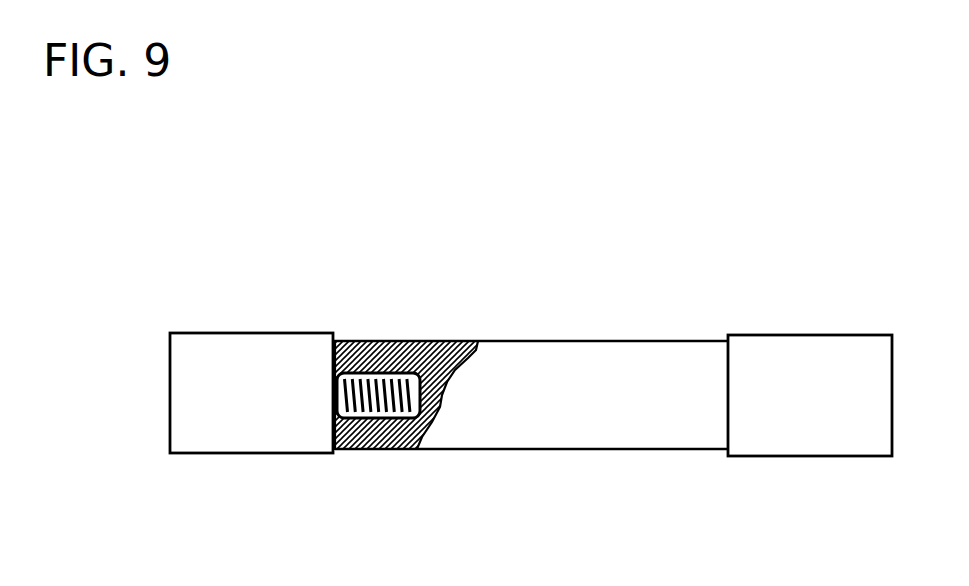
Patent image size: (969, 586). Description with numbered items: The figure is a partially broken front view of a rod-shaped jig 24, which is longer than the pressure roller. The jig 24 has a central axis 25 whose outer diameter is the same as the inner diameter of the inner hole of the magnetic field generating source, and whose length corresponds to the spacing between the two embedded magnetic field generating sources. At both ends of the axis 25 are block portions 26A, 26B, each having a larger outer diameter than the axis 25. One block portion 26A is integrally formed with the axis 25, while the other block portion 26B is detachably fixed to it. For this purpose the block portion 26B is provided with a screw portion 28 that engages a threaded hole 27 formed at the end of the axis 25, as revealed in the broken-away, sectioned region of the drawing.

The rod-shaped jig 24 is at (624, 308).
The axis 25 is at (603, 431).
The block portion 26A is at (811, 429).
The block portion 26B is at (258, 440).
The threaded hole 27 is at (395, 372).
The screw portion 28 is at (356, 374).